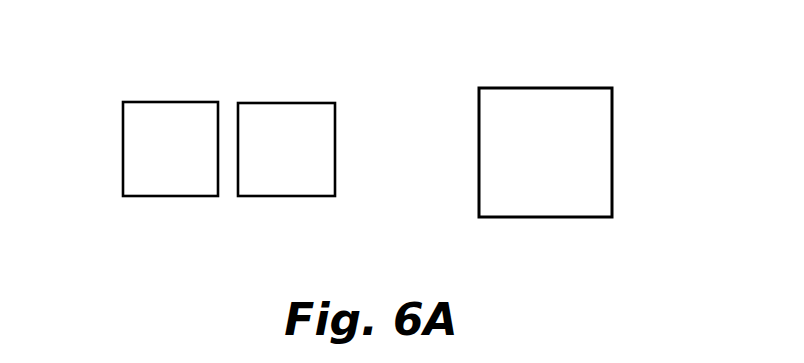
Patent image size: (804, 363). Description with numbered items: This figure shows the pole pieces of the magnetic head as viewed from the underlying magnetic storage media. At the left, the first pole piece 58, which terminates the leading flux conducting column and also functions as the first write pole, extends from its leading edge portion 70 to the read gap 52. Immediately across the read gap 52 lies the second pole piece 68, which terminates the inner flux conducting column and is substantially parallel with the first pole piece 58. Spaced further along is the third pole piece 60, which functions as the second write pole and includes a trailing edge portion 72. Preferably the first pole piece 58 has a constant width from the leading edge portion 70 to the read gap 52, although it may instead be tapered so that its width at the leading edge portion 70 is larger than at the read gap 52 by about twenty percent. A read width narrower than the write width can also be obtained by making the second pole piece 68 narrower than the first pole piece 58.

The first pole piece 58 is at (160, 120).
The read gap 52 is at (230, 125).
The second pole piece 68 is at (282, 122).
The leading edge portion 70 is at (123, 148).
The third pole piece 60 is at (541, 107).
The trailing edge portion 72 is at (613, 133).